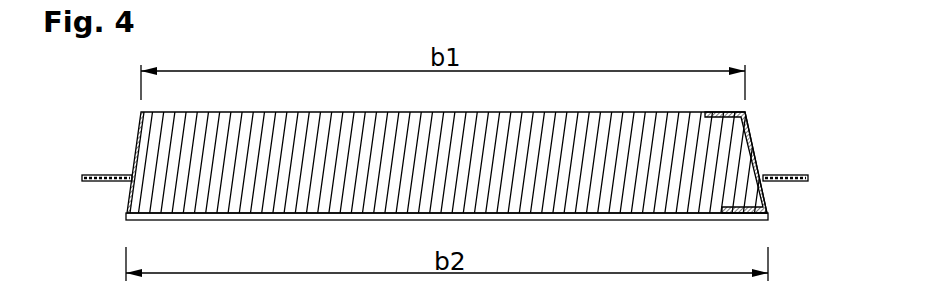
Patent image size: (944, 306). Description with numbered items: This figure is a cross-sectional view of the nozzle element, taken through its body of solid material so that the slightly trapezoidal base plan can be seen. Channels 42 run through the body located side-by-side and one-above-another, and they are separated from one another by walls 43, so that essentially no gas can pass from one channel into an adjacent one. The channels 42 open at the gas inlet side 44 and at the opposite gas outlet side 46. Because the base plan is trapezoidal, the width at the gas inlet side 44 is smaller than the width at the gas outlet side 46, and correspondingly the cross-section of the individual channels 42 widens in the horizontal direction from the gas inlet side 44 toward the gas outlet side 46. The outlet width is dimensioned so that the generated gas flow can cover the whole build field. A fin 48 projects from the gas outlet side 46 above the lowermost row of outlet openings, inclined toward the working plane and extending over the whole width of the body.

The channels 42 is at (652, 203).
The walls 43 is at (183, 213).
The gas inlet side 44 is at (510, 109).
The gas outlet side 46 is at (494, 223).
The fin 48 is at (323, 213).